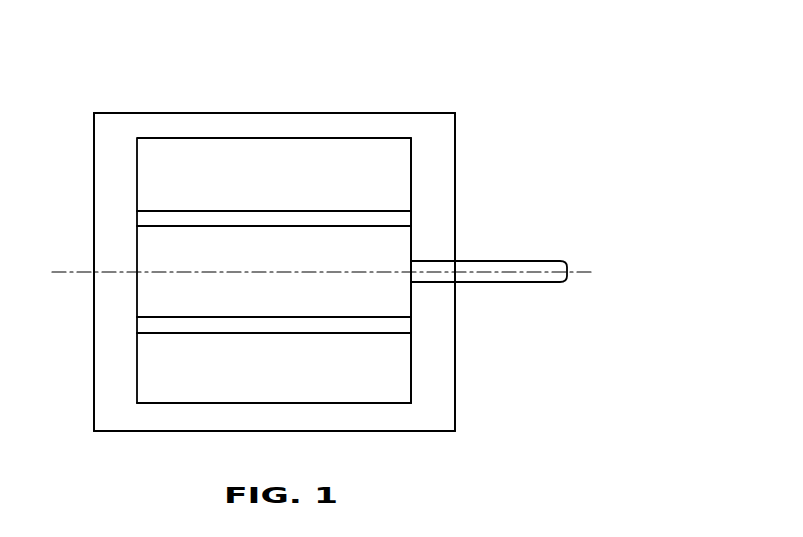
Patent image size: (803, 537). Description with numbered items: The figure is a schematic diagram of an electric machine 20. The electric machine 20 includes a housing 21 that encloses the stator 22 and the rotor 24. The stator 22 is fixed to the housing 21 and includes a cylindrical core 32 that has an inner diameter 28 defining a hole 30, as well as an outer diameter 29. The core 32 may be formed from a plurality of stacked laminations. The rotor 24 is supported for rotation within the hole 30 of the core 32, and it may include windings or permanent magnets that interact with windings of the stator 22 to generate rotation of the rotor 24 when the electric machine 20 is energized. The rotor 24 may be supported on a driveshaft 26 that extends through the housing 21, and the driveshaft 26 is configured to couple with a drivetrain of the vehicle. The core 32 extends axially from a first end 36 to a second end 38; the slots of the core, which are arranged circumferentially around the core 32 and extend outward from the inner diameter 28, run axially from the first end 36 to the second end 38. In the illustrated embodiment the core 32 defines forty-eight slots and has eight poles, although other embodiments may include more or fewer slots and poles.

The electric machine 20 is at (450, 60).
The housing 21 is at (277, 113).
The stator 22 is at (187, 138).
The rotor 24 is at (137, 250).
The driveshaft 26 is at (495, 261).
The inner diameter 28 is at (390, 221).
The outer diameter 29 is at (192, 403).
The hole 30 is at (432, 322).
The cylindrical core 32 is at (412, 175).
The first end 36 is at (137, 180).
The second end 38 is at (412, 367).